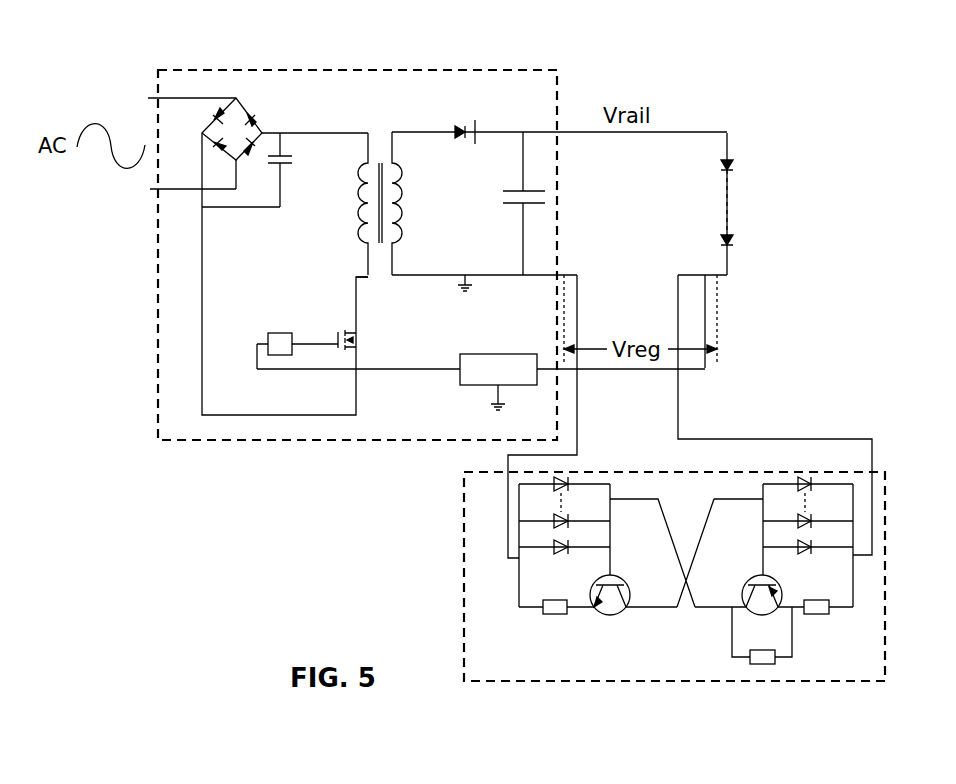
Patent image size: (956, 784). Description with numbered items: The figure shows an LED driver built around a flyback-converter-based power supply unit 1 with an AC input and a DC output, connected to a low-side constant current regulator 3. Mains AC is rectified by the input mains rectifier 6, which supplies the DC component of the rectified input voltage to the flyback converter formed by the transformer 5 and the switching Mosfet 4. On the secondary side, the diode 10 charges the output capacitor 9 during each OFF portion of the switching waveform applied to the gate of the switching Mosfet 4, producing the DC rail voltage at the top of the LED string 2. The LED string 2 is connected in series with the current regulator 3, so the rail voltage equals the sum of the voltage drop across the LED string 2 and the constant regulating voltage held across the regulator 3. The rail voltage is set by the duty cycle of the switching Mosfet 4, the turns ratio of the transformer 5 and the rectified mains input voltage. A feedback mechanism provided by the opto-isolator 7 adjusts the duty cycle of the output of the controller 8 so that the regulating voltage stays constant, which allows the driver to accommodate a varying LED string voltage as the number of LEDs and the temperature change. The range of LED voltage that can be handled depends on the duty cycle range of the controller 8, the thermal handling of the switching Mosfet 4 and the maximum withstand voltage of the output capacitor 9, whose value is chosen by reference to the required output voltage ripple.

The power supply unit 1 is at (202, 442).
The LED string 2 is at (728, 200).
The current regulator 3 is at (612, 470).
The switching Mosfet 4 is at (352, 341).
The transformer 5 is at (393, 225).
The input mains rectifier 6 is at (259, 102).
The opto-isolator 7 is at (466, 386).
The controller 8 is at (280, 333).
The output capacitor 9 is at (513, 204).
The diode 10 is at (460, 127).